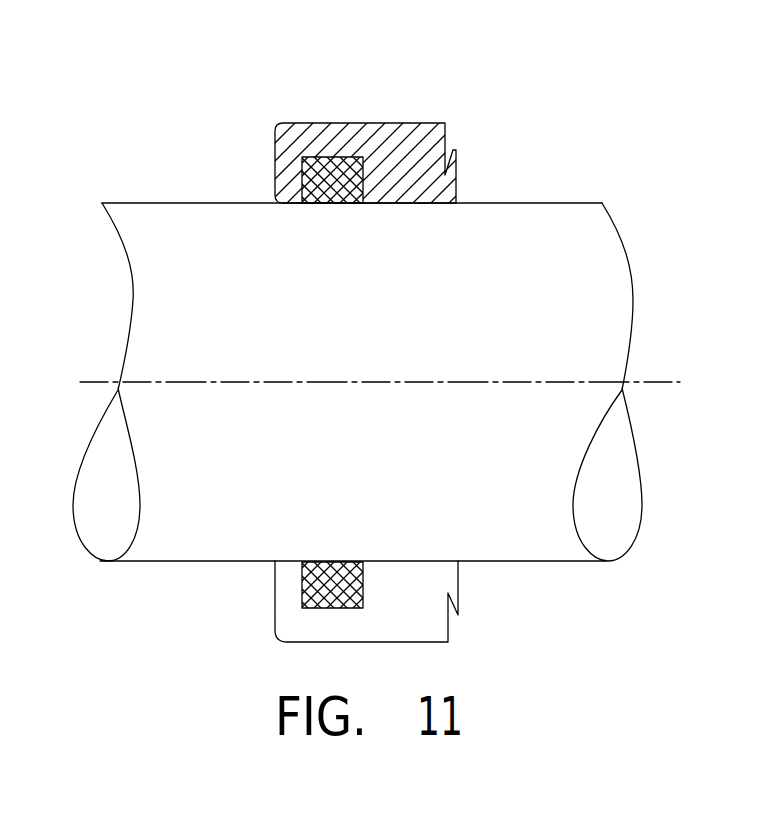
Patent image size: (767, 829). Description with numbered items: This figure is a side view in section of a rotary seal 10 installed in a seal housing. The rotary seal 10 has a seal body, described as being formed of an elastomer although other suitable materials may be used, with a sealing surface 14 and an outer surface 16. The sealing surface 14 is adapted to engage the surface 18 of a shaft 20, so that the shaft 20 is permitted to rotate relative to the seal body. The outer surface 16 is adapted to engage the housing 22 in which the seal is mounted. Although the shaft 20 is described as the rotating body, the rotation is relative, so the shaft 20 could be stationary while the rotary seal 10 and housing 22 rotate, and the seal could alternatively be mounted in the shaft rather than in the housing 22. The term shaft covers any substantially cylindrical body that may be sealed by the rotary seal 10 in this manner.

The rotary seal 10 is at (364, 343).
The sealing surface 14 is at (335, 212).
The outer surface 16 is at (340, 157).
The surface 18 is at (140, 203).
The shaft 20 is at (578, 290).
The housing 22 is at (418, 138).